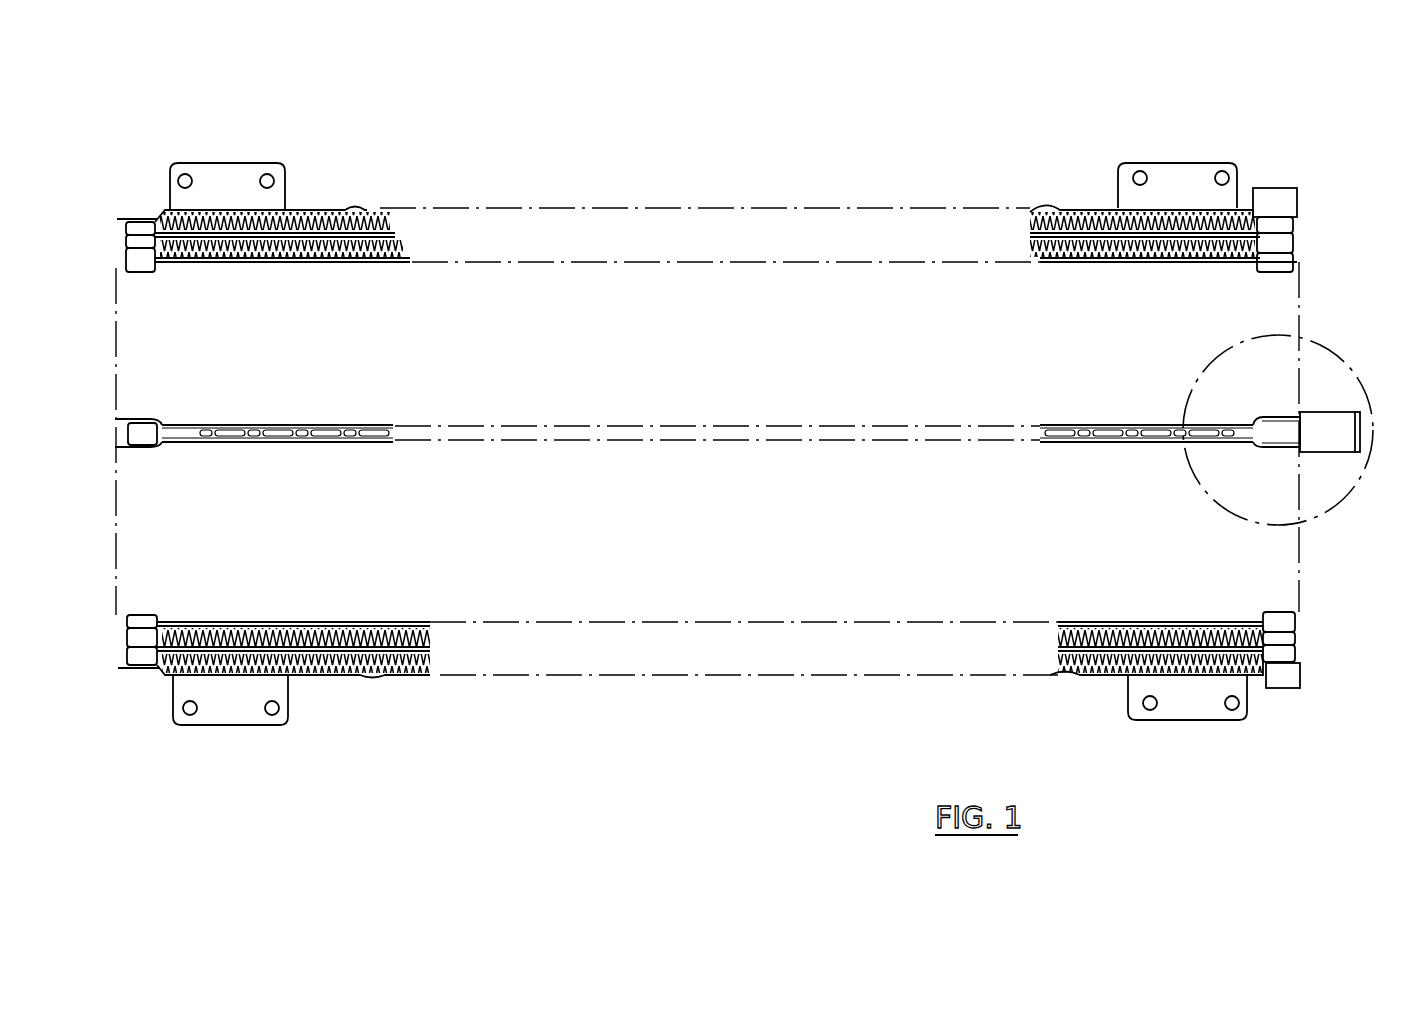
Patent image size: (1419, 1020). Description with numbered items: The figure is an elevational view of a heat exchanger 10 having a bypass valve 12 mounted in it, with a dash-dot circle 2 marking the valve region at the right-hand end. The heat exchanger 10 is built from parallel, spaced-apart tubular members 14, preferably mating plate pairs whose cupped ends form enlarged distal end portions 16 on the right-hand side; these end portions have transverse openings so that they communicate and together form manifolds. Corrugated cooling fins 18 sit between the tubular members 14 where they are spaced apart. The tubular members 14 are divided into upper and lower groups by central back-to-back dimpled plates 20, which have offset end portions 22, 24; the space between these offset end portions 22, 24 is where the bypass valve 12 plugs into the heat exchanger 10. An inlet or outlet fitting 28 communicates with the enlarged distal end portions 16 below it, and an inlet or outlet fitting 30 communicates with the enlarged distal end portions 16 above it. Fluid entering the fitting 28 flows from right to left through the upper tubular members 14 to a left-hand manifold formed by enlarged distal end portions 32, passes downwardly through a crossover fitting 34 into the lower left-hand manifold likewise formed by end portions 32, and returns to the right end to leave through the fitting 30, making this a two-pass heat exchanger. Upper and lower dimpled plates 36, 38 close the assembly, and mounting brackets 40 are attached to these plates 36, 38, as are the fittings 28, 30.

The heat exchanger 10 is at (1228, 116).
The bypass valve 12 is at (1340, 420).
The tubular members 14 is at (128, 224).
The enlarged distal end portions 16 is at (1295, 247).
The corrugated cooling fins 18 is at (1030, 218).
The detail circle 2 is at (1343, 500).
The dimpled plates 20 is at (1090, 425).
The offset end portion 22 is at (142, 423).
The offset end portion 24 is at (142, 447).
The inlet or outlet fitting 28 is at (1270, 188).
The inlet or outlet fitting 30 is at (1283, 690).
The enlarged distal end portions 32 is at (128, 238).
The crossover fitting 34 is at (125, 435).
The dimpled plate 36 is at (1073, 207).
The dimpled plate 38 is at (1090, 677).
The mounting brackets 40 is at (225, 163).